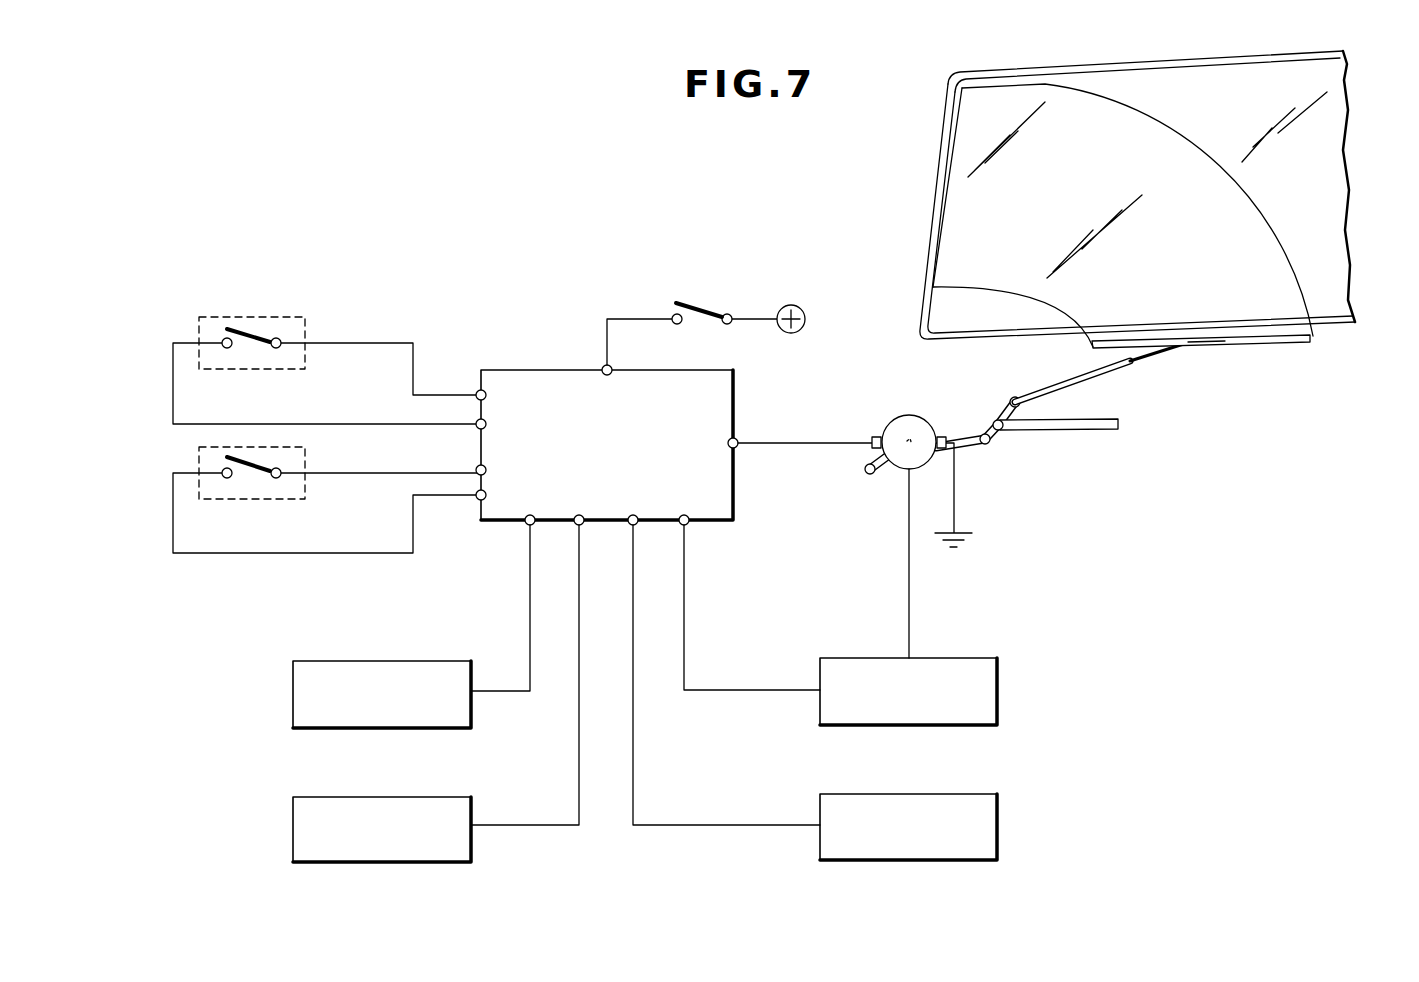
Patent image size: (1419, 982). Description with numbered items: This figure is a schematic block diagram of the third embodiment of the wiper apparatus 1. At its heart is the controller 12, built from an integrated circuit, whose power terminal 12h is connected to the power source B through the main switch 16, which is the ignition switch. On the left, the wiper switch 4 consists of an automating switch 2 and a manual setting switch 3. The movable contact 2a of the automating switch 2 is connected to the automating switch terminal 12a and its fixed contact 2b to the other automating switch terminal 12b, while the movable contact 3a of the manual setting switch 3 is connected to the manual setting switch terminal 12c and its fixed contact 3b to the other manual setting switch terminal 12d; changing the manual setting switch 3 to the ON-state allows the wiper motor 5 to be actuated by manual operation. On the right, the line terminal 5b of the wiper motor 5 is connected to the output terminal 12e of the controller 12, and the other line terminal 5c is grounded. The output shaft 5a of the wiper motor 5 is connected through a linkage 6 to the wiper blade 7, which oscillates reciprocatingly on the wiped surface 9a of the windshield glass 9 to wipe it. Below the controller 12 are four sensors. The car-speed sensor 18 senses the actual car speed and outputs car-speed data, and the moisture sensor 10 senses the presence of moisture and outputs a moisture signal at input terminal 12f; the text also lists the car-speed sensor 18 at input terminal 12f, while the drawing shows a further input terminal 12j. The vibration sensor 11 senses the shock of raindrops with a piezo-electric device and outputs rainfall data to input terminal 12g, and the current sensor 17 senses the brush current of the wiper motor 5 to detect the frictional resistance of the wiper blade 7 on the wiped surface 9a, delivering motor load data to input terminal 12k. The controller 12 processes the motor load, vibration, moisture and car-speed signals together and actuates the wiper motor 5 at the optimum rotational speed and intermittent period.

The wiper apparatus 1 is at (538, 268).
The automating switch 2 is at (198, 332).
The movable contact 2a is at (278, 338).
The fixed contact 2b is at (222, 338).
The manual setting switch 3 is at (198, 458).
The movable contact 3a is at (284, 470).
The fixed contact 3b is at (227, 479).
The wiper switch 4 is at (136, 294).
The wiper motor 5 is at (905, 416).
The output shaft 5a is at (905, 446).
The line terminal 5b is at (877, 436).
The line terminal 5c is at (942, 436).
The linkage 6 is at (965, 455).
The wiper blade 7 is at (1268, 346).
The windshield glass 9 is at (1345, 178).
The wiped surface 9a is at (960, 165).
The moisture sensor 10 is at (357, 797).
The vibration sensor 11 is at (870, 794).
The controller 12 is at (526, 369).
The automating switch terminal 12a is at (478, 392).
The automating switch terminal 12b is at (476, 427).
The manual setting switch terminal 12c is at (476, 472).
The manual setting switch terminal 12d is at (478, 499).
The output terminal 12e is at (737, 447).
The input terminal 12f is at (577, 525).
The input terminal 12g is at (635, 525).
The power terminal 12h is at (604, 366).
The controller input terminal 12j is at (527, 525).
The input terminal 12k is at (686, 524).
The main switch 16 is at (707, 306).
The current sensor 17 is at (945, 658).
The car-speed sensor 18 is at (380, 661).
The power source B is at (791, 305).